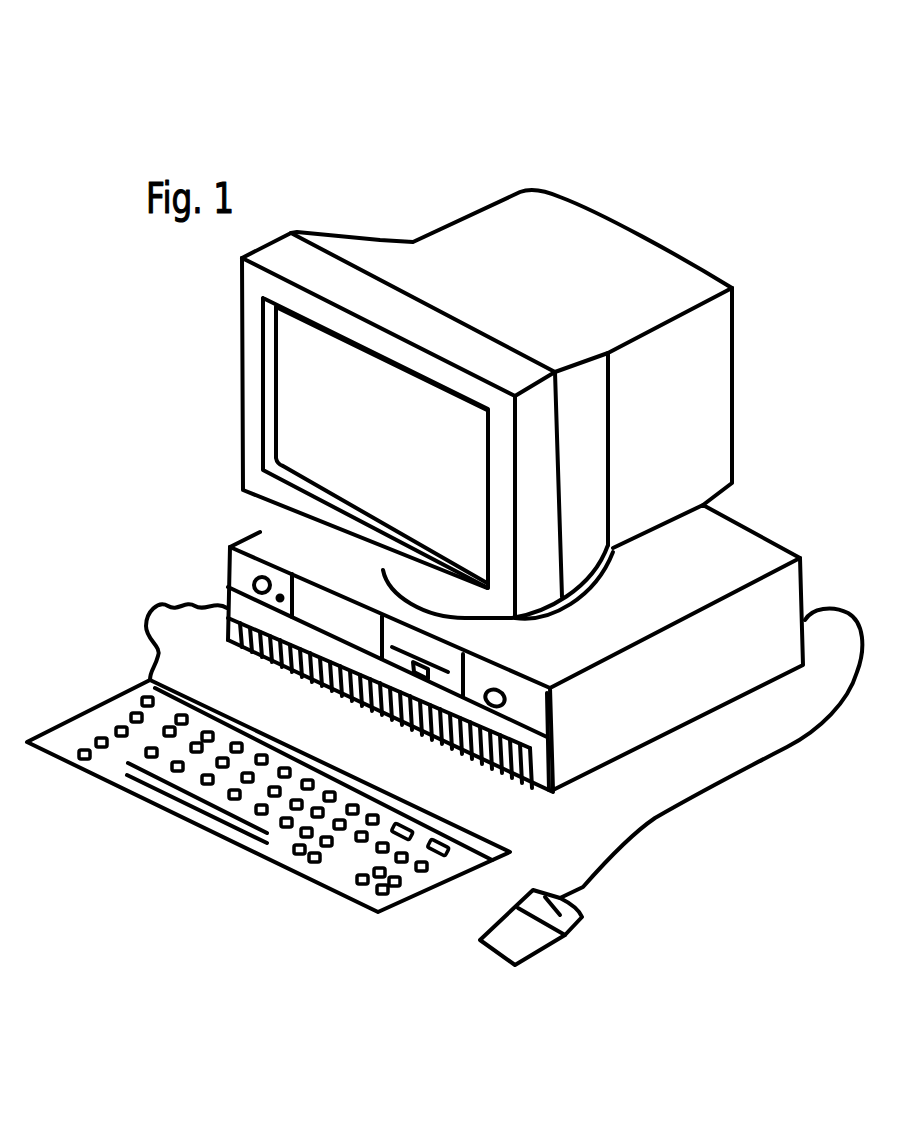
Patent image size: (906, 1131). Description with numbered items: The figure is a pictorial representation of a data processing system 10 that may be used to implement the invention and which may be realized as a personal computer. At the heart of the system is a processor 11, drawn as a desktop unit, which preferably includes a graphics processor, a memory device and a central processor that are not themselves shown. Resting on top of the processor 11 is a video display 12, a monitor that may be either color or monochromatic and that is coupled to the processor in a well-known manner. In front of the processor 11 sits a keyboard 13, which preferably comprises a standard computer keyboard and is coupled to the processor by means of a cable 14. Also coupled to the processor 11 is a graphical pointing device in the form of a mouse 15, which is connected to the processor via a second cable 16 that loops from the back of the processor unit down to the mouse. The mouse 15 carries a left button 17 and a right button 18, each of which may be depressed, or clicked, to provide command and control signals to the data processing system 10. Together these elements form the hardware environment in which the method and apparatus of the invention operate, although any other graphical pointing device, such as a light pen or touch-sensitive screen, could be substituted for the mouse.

The data processing system 10 is at (532, 133).
The processor 11 is at (227, 585).
The video display 12 is at (236, 416).
The keyboard 13 is at (180, 827).
The cable 14 is at (147, 642).
The mouse 15 is at (548, 948).
The cable 16 is at (712, 785).
The left button 17 is at (553, 890).
The right button 18 is at (583, 917).